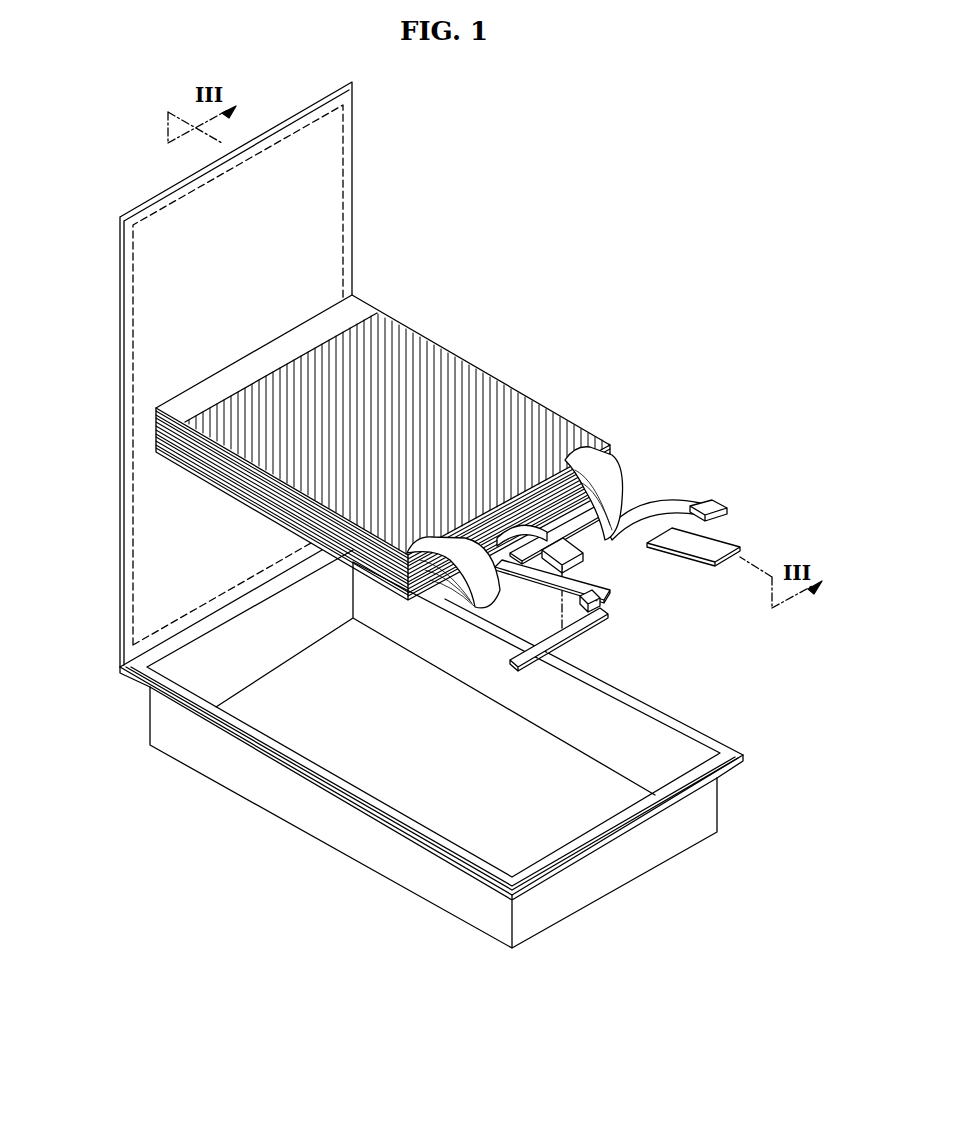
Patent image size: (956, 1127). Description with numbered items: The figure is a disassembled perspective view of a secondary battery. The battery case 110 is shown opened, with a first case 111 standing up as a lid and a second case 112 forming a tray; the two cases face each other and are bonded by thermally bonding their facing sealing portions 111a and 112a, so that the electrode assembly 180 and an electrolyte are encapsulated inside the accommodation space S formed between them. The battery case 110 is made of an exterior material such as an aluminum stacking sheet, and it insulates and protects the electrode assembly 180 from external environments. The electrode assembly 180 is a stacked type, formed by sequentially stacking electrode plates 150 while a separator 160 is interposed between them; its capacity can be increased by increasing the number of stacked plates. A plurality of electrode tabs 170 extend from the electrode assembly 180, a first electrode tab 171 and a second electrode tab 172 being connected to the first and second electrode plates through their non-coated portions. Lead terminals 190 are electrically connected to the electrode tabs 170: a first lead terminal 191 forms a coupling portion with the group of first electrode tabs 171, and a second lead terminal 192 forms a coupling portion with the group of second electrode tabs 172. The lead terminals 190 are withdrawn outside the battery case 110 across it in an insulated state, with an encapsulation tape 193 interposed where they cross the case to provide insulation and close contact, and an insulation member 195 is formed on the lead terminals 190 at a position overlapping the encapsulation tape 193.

The battery case 110 is at (142, 792).
The first case 111 is at (356, 222).
The sealing portion 111a is at (330, 158).
The second case 112 is at (235, 779).
The sealing portion 112a is at (405, 823).
The accommodation space S is at (384, 733).
The electrode plates 150 is at (363, 310).
The separator 160 is at (155, 409).
The electrode assembly 180 is at (493, 357).
The electrode tabs 170 is at (493, 538).
The first electrode tab 171 is at (602, 443).
The second electrode tab 172 is at (406, 560).
The lead terminals 190 is at (624, 590).
The first lead terminal 191 is at (708, 547).
The second lead terminal 192 is at (590, 612).
The encapsulation tape 193 is at (562, 535).
The insulation member 195 is at (528, 532).